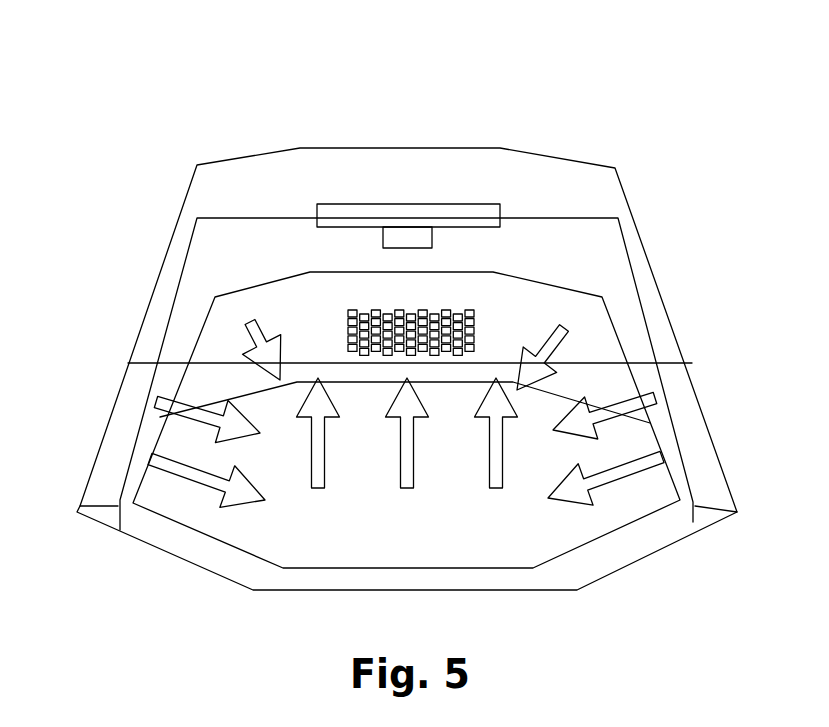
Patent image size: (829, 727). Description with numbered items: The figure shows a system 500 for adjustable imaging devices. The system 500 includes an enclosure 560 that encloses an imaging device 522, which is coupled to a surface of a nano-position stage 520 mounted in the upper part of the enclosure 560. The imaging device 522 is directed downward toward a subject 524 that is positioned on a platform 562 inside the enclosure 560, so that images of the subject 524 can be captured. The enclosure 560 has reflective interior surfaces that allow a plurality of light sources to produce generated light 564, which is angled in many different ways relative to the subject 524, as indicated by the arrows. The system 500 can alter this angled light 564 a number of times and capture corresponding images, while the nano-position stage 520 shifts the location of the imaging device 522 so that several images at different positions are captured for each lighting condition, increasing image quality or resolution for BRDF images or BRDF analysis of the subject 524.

The system 500 is at (643, 63).
The nano-position stage 520 is at (317, 210).
The imaging device 522 is at (383, 245).
The subject 524 is at (423, 328).
The enclosure 560 is at (617, 167).
The platform 562 is at (128, 363).
The generated light 564 is at (615, 403).